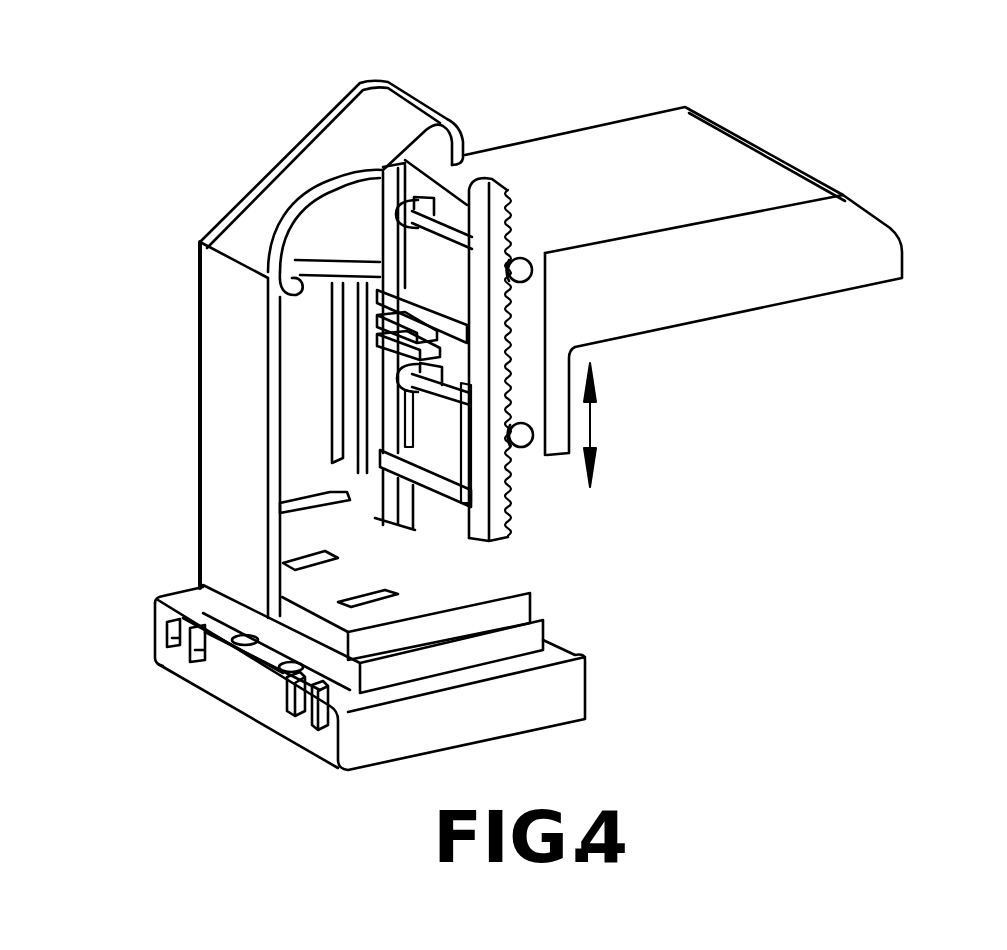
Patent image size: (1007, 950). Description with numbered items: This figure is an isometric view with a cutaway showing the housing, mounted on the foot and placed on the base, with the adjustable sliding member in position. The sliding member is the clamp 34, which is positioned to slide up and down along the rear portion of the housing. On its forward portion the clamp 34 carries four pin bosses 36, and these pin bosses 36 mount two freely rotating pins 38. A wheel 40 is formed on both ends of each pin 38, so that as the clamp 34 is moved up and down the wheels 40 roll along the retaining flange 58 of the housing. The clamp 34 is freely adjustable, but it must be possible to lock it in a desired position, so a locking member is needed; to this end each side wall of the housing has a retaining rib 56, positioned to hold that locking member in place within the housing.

The clamp 34 is at (832, 290).
The pin boss 36 is at (490, 243).
The pin 38 is at (460, 230).
The wheel 40 is at (543, 253).
The retaining rib 56 is at (358, 456).
The retaining flange 58 is at (417, 448).